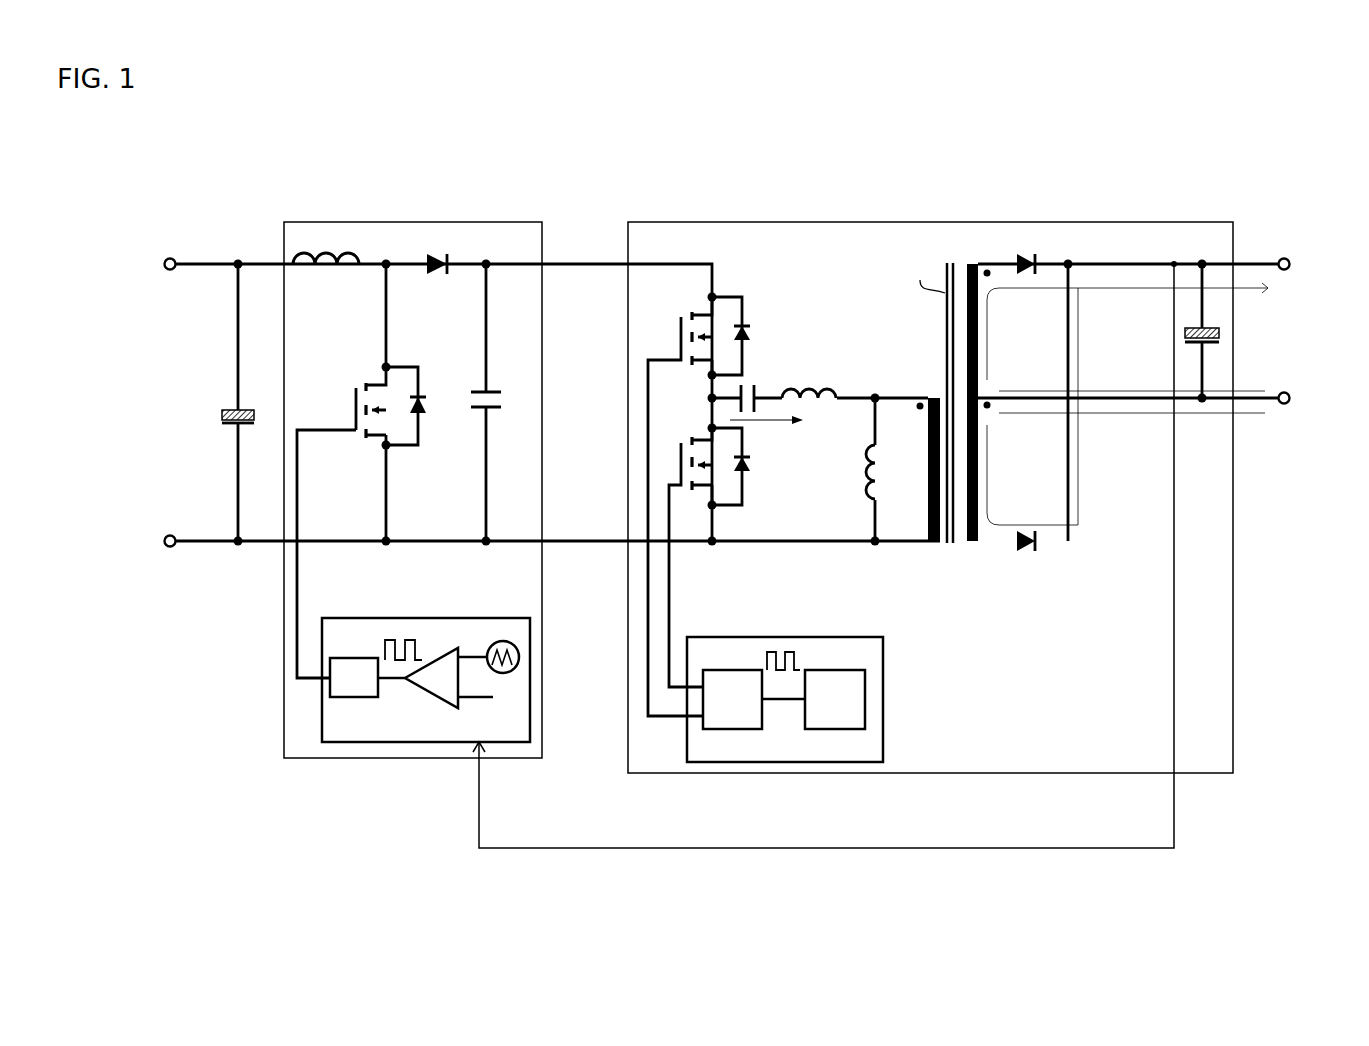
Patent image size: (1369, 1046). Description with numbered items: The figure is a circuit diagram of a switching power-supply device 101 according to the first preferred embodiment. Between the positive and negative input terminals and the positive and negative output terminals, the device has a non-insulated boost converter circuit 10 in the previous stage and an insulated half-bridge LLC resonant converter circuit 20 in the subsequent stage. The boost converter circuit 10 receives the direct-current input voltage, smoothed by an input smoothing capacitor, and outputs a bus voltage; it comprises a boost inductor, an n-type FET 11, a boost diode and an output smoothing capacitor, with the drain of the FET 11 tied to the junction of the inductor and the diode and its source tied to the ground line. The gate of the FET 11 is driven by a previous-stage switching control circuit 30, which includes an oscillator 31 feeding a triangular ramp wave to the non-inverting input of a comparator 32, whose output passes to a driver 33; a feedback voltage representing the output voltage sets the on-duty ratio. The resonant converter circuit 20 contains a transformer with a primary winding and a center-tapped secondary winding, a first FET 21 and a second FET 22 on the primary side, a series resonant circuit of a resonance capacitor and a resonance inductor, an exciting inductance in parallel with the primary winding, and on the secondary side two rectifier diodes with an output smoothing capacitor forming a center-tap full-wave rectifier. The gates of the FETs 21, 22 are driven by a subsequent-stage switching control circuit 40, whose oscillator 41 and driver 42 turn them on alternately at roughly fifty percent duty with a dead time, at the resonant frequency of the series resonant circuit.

The switching power-supply device 101 is at (217, 187).
The boost converter circuit 10 is at (284, 222).
The FET 11 is at (361, 517).
The resonant converter circuit 20 is at (628, 222).
The FET 21 is at (699, 501).
The FET 22 is at (709, 548).
The previous-stage switching control circuit 30 is at (335, 742).
The oscillator 31 is at (503, 641).
The comparator 32 is at (437, 650).
The driver 33 is at (352, 658).
The subsequent-stage switching control circuit 40 is at (858, 637).
The oscillator (OSC) 41 is at (865, 670).
The driver 42 is at (703, 729).